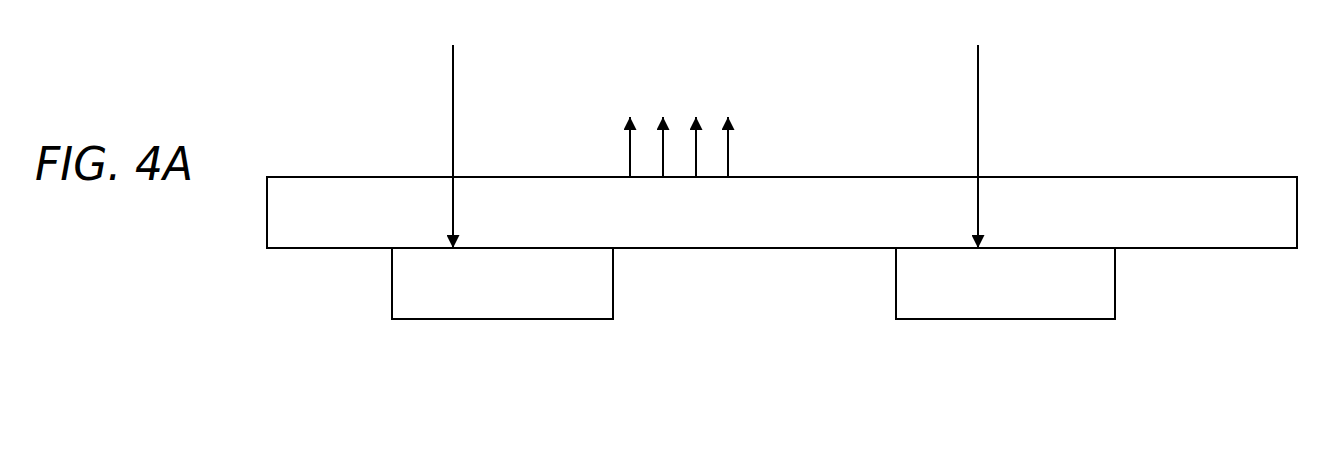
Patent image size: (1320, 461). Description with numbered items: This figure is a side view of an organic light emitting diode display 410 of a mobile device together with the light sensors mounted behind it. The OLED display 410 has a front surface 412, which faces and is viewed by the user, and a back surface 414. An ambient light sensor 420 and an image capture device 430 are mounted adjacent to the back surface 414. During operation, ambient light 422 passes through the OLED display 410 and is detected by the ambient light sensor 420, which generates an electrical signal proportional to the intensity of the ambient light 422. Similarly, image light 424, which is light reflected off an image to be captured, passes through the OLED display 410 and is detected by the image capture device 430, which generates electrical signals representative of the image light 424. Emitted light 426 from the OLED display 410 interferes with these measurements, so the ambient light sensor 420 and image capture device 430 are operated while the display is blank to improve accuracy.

The organic light emitting diode (OLED) display 410 is at (836, 224).
The front surface 412 is at (1228, 176).
The back surface 414 is at (1228, 250).
The ambient light sensor 420 is at (545, 295).
The ambient light 422 is at (453, 106).
The image light 424 is at (978, 107).
The emitted light 426 is at (663, 118).
The image capture device 430 is at (1064, 308).